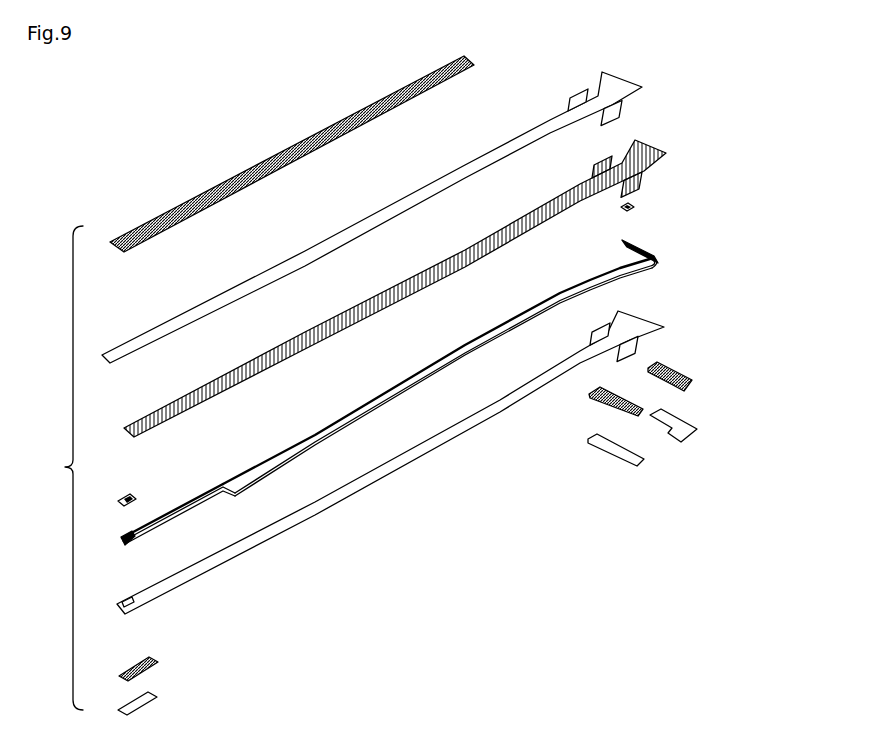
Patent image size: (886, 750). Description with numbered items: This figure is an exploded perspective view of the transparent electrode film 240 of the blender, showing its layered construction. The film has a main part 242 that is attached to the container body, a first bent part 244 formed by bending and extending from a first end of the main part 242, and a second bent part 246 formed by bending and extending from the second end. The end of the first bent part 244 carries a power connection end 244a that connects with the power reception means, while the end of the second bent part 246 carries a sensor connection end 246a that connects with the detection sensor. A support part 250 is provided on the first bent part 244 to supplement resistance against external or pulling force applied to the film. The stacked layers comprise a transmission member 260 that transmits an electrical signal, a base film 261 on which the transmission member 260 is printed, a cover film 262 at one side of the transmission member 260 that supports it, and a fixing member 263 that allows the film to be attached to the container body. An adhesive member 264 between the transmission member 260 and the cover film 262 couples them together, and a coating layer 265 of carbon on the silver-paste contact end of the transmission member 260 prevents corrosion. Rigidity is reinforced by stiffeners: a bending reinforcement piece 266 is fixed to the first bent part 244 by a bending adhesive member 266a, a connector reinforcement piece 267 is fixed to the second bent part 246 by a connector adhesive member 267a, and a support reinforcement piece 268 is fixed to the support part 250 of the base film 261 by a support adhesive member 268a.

The transparent electrode film 240 is at (57, 468).
The main part 242 is at (417, 378).
The first bent part 244 is at (654, 268).
The power connection end 244a is at (622, 243).
The second bent part 246 is at (167, 534).
The sensor connection end 246a is at (128, 545).
The support part 250 is at (572, 99).
The transmission member 260 is at (422, 406).
The base film 261 is at (676, 321).
The cover film 262 is at (652, 82).
The fixing member 263 is at (258, 150).
The adhesive member 264 is at (673, 149).
The coating layer 265 is at (640, 207).
The bending reinforcement piece 266 is at (700, 424).
The bending adhesive member 266a is at (698, 376).
The connector reinforcement piece 267 is at (160, 698).
The connector adhesive member 267a is at (160, 664).
The support reinforcement piece 268 is at (638, 478).
The support adhesive member 268a is at (596, 408).